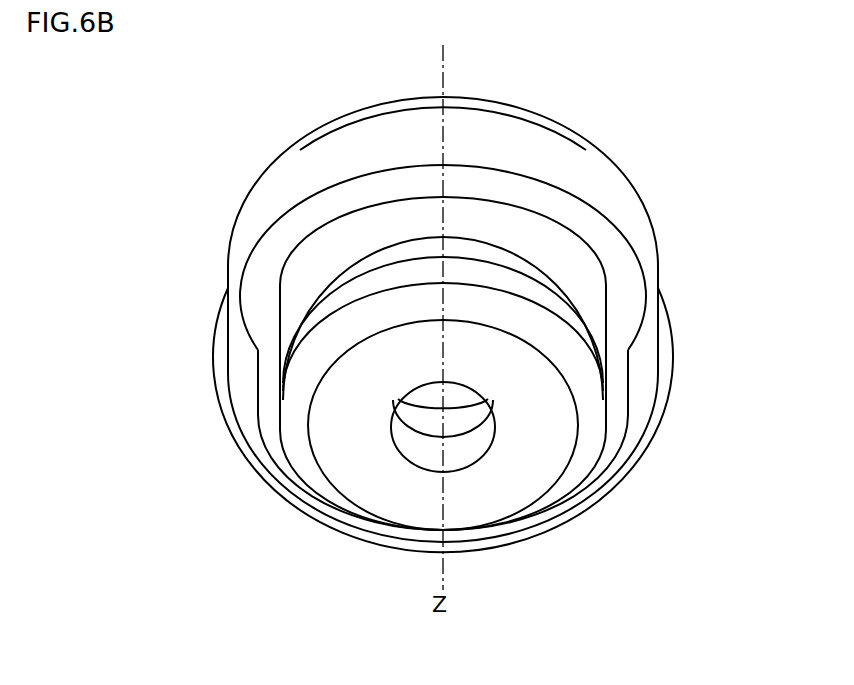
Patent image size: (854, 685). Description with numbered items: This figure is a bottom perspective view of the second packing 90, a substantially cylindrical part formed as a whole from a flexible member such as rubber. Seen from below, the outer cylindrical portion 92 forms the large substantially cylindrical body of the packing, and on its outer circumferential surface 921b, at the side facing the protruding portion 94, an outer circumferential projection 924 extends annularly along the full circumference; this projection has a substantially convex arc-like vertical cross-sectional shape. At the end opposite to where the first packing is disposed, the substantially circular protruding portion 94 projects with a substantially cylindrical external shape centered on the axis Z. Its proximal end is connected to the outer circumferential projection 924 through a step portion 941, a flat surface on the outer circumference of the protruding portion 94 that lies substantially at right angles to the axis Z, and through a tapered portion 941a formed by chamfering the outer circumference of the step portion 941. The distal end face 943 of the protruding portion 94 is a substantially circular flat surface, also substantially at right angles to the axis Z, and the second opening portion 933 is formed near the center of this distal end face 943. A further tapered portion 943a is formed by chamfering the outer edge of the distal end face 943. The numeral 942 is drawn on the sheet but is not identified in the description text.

The second packing 90 is at (210, 184).
The outer cylindrical portion 92 is at (547, 123).
The outer circumferential surface 921b is at (475, 137).
The outer circumferential projection 924 is at (632, 273).
The step portion 941 is at (512, 258).
The tapered portion 941a is at (570, 255).
The protruding portion 94 is at (422, 259).
The lens flat portion 942 is at (385, 280).
The distal end face 943 is at (410, 490).
The tapered portion 943a is at (323, 488).
The second opening portion 933 is at (460, 468).